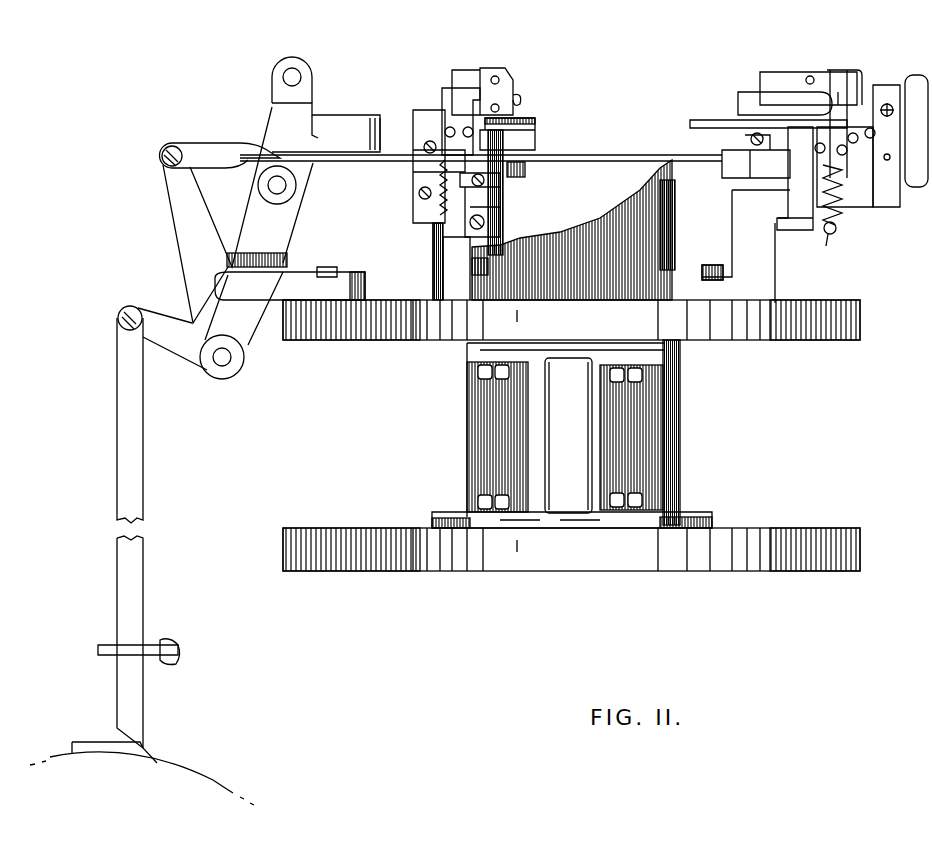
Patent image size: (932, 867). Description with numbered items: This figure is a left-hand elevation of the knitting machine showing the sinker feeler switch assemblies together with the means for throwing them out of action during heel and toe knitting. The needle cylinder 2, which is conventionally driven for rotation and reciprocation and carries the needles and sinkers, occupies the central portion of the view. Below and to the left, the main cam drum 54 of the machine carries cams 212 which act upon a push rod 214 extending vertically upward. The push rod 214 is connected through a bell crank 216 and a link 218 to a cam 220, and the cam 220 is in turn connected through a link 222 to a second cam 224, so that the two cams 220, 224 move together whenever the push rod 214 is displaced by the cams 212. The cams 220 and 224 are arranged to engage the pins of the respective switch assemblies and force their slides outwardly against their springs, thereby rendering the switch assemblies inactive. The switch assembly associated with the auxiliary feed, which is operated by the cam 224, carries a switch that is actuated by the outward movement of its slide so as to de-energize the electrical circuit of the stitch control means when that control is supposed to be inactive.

The needle cylinder 2 is at (680, 447).
The main cam drum 54 is at (213, 780).
The cams 212 is at (143, 750).
The push rod 214 is at (133, 593).
The bell crank 216 is at (185, 255).
The link 218 is at (212, 153).
The cam 220 is at (528, 150).
The link 222 is at (582, 153).
The cam 224 is at (723, 158).